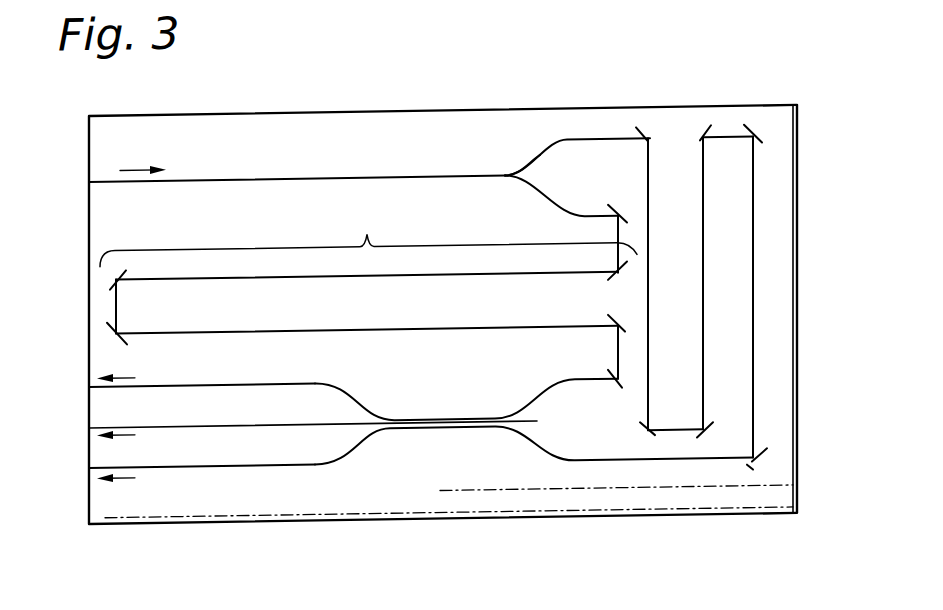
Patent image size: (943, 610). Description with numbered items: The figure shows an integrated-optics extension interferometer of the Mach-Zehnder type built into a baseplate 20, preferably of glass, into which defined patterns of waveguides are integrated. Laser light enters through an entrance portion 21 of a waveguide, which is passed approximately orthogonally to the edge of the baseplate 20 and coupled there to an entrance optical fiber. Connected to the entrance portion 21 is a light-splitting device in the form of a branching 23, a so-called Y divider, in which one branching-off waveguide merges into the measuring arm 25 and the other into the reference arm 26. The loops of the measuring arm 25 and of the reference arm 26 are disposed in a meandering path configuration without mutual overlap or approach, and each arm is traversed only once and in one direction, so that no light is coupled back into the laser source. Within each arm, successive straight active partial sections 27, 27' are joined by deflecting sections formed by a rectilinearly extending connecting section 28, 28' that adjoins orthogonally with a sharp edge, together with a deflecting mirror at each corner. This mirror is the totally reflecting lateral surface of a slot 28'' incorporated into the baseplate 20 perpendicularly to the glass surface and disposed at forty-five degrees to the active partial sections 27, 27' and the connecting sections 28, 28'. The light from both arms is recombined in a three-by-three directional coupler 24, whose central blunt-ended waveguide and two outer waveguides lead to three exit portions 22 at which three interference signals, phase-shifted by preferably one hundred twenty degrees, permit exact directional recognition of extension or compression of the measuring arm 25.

The baseplate 20 is at (345, 134).
The entrance portion 21 is at (226, 184).
The exit portions 22 is at (193, 389).
The branching 23 is at (509, 172).
The 3×3 directional coupler 24 is at (443, 440).
The measuring arm 25 is at (783, 136).
The reference arm 26 is at (368, 265).
The straight active partial sections 27 is at (754, 297).
The straight active partial sections 27' is at (367, 303).
The connecting section 28 is at (713, 276).
The connecting section 28' is at (367, 301).
The slot 28'' is at (391, 356).